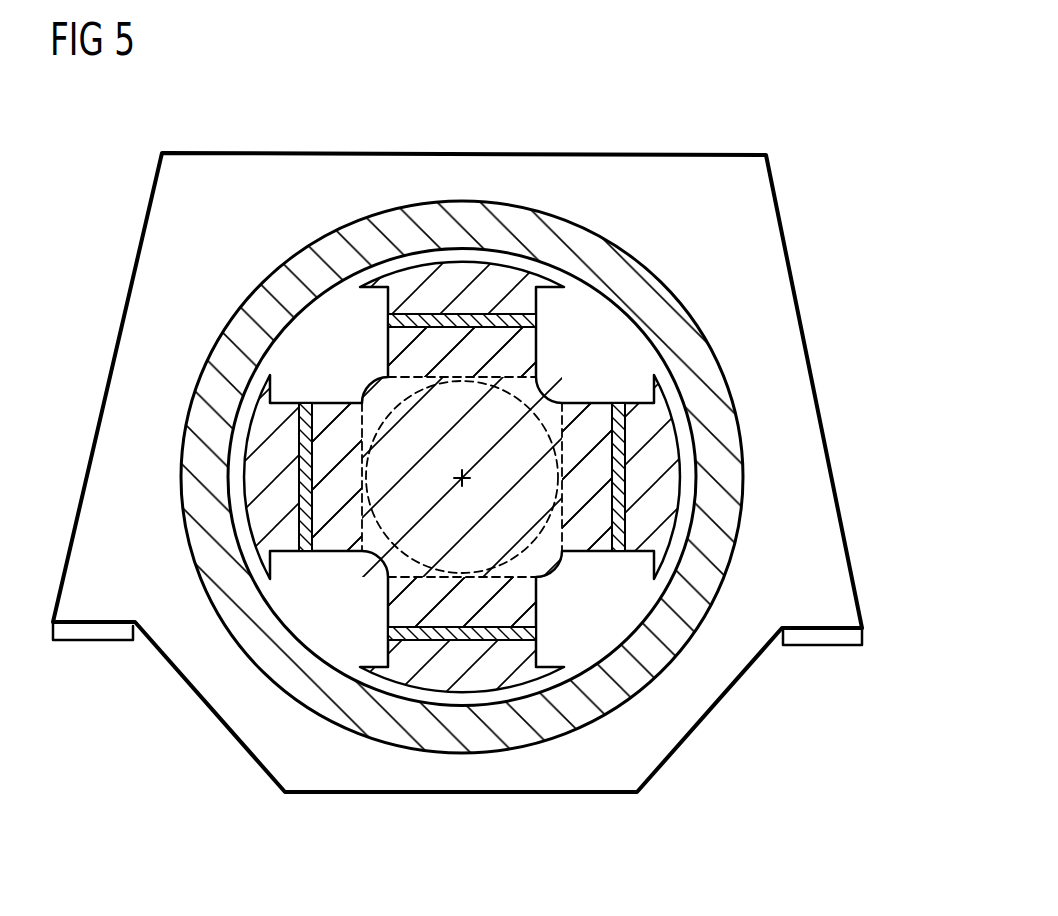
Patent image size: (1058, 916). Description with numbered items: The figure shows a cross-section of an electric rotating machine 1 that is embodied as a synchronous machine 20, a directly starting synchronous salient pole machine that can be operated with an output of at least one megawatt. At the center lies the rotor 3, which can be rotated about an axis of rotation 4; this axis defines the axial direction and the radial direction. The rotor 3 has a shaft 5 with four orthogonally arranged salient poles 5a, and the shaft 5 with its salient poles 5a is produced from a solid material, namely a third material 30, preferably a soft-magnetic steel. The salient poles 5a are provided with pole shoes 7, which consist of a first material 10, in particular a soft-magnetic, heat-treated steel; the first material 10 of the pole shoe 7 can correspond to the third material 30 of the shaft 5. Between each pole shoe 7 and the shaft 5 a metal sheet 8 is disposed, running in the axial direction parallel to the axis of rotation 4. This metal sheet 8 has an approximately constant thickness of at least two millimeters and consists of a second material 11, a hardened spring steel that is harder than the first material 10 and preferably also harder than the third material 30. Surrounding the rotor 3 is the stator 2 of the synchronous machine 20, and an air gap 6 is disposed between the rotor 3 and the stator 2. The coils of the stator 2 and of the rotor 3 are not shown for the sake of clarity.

The electric rotating machine 1 is at (703, 122).
The synchronous machine 20 is at (457, 419).
The stator 2 is at (527, 226).
The rotor 3 is at (386, 387).
The axis of rotation 4 is at (465, 481).
The shaft 5 is at (336, 548).
The salient poles 5a is at (401, 341).
The air gap 6 is at (440, 700).
The pole shoes 7 is at (570, 477).
The first material 10 is at (666, 453).
The metal sheet 8 is at (462, 373).
The second material 11 is at (470, 322).
The third material 30 is at (402, 615).